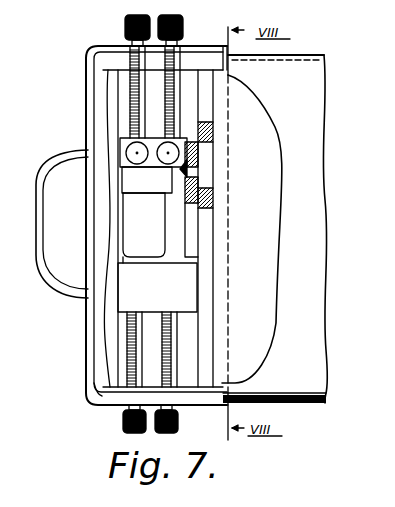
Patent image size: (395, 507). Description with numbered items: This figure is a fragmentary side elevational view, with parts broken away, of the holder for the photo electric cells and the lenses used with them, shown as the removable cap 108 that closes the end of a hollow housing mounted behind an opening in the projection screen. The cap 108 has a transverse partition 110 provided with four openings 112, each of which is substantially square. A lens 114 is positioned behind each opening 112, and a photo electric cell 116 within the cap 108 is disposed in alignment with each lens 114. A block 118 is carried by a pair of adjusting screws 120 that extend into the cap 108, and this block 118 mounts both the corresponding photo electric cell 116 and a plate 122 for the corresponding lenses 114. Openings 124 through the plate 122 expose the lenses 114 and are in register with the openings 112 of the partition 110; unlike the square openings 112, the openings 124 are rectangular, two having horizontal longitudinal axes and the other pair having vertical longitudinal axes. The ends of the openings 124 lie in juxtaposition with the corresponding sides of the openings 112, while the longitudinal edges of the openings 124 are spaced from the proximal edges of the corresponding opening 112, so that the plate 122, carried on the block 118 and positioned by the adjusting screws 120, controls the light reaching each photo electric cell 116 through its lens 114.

The cap 108 is at (86, 406).
The transverse partition 110 is at (200, 340).
The opening 112 is at (207, 167).
The lens 114 is at (185, 165).
The photo electric cell 116 is at (155, 233).
The block 118 is at (180, 290).
The adjusting screw 120 is at (165, 107).
The plate 122 is at (190, 247).
The opening 124 is at (190, 177).